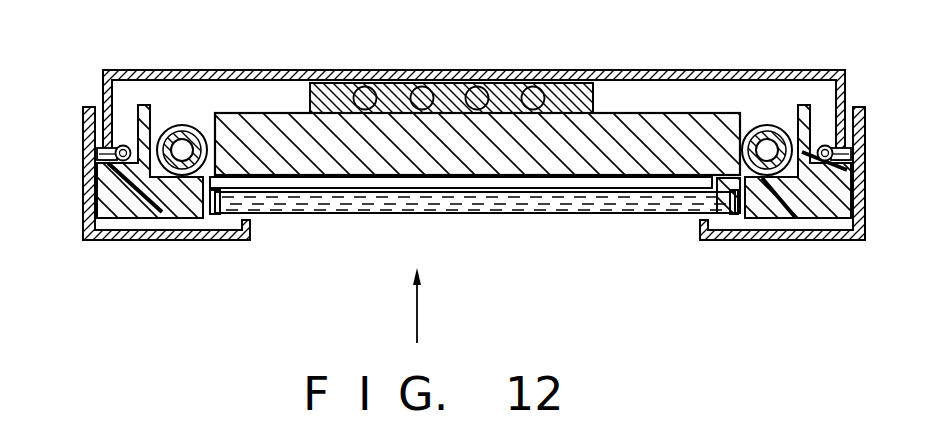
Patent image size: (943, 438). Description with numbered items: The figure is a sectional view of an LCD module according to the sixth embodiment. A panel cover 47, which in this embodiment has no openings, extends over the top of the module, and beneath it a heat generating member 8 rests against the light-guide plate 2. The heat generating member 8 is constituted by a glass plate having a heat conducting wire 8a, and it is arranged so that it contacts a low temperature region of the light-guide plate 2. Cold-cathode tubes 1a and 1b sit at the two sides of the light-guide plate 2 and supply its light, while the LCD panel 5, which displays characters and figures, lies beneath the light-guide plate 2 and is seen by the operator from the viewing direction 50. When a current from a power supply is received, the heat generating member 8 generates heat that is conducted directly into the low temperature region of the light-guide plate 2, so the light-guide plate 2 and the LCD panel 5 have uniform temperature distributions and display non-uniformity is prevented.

The panel cover 47 is at (233, 70).
The heat generating member 8 is at (573, 72).
The heat conducting wire 8a is at (512, 71).
The light-guide plate 2 is at (358, 150).
The LCD panel 5 is at (513, 197).
The cold-cathode tube 1b is at (178, 175).
The cold-cathode tube 1a is at (763, 172).
The viewing direction 50 is at (418, 322).